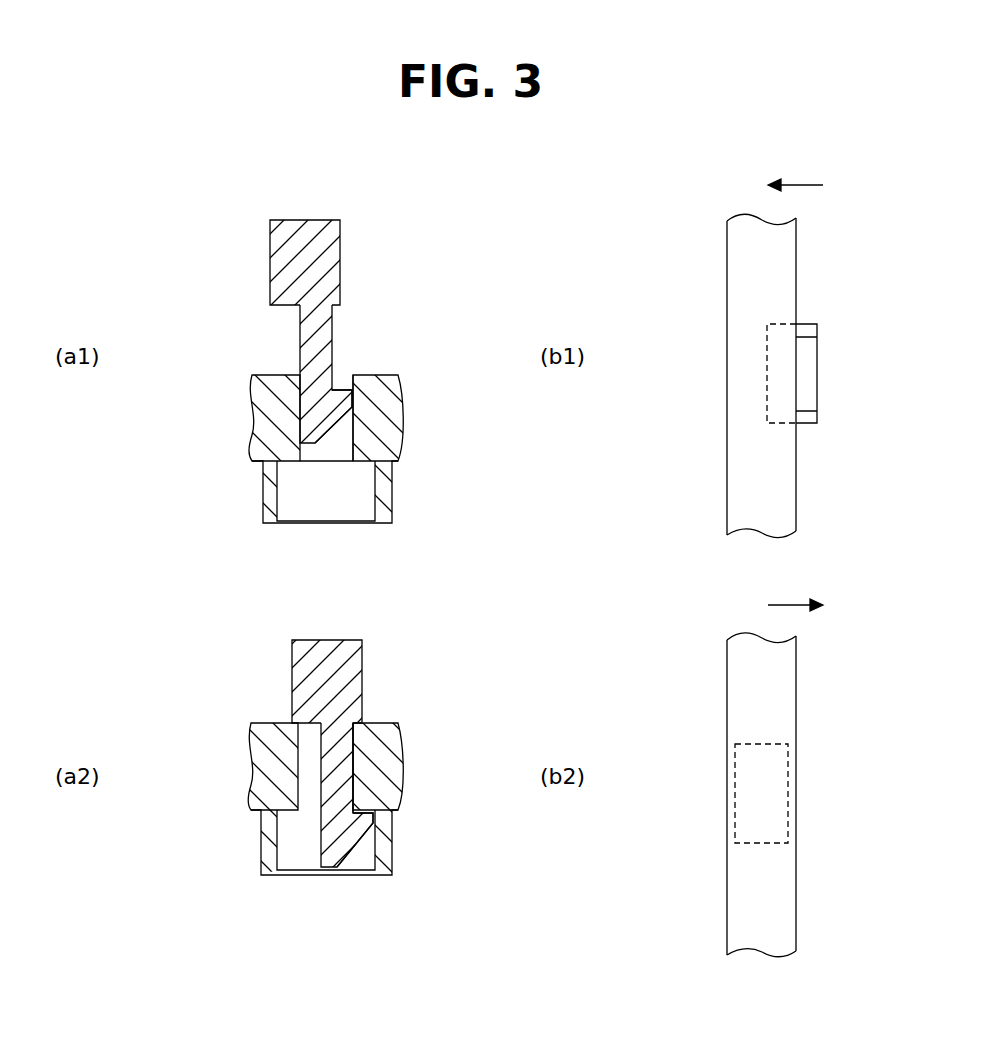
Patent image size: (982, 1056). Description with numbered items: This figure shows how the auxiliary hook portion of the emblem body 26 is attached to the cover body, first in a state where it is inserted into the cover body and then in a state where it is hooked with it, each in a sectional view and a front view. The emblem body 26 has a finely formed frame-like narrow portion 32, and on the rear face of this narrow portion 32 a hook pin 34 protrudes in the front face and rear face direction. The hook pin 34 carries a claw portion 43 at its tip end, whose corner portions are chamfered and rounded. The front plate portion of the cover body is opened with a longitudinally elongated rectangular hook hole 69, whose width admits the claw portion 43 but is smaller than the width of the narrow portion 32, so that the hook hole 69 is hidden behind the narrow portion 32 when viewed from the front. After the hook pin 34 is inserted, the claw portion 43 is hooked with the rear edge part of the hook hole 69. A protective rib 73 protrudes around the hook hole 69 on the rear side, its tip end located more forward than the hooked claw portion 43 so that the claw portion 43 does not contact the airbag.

The emblem body 26 is at (322, 230).
The narrow portion 32 is at (282, 268).
The hook pin 34 is at (325, 323).
The claw portion 43 is at (347, 392).
The hook hole 69 is at (353, 382).
The rib 73 is at (392, 507).